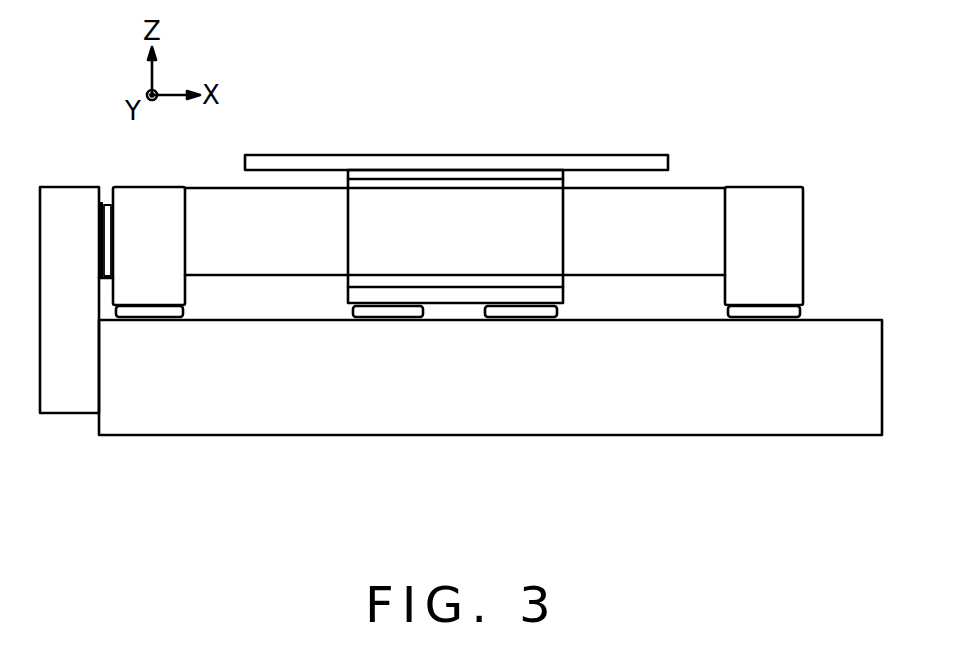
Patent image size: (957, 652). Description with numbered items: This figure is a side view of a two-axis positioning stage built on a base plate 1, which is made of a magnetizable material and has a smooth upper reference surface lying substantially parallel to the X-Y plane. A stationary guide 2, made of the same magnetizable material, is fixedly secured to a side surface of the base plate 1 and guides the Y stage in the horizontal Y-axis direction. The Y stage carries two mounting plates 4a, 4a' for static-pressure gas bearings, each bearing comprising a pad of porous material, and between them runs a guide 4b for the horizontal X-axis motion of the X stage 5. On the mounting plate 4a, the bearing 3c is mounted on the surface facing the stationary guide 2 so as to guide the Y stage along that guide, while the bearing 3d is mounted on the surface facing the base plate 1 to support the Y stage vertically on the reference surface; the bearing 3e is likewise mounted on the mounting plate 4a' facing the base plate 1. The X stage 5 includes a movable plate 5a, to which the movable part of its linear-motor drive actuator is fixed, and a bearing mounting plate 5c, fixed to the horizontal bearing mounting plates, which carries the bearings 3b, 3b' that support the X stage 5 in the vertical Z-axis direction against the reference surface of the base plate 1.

The base plate 1 is at (458, 421).
The stationary guide 2 is at (58, 204).
The static-pressure gas bearing 3b is at (388, 341).
The static-pressure gas bearing 3b' is at (521, 341).
The static-pressure gas bearing 3c is at (102, 198).
The static-pressure gas bearing 3d is at (150, 320).
The static-pressure gas bearing 3e is at (762, 320).
The mounting plate 4a is at (149, 219).
The mounting plate 4a' is at (764, 217).
The guide 4b is at (691, 215).
The X stage 5 is at (497, 200).
The movable plate 5a is at (443, 165).
The bearing mounting plate 5c is at (556, 298).